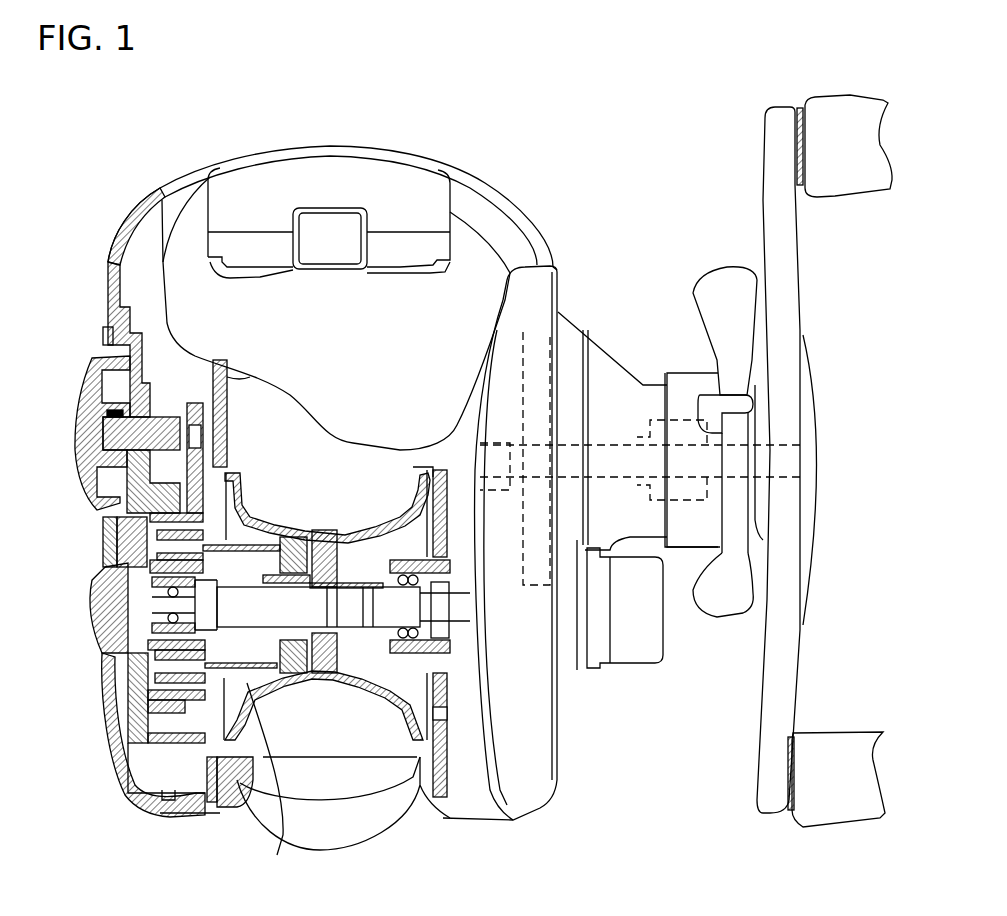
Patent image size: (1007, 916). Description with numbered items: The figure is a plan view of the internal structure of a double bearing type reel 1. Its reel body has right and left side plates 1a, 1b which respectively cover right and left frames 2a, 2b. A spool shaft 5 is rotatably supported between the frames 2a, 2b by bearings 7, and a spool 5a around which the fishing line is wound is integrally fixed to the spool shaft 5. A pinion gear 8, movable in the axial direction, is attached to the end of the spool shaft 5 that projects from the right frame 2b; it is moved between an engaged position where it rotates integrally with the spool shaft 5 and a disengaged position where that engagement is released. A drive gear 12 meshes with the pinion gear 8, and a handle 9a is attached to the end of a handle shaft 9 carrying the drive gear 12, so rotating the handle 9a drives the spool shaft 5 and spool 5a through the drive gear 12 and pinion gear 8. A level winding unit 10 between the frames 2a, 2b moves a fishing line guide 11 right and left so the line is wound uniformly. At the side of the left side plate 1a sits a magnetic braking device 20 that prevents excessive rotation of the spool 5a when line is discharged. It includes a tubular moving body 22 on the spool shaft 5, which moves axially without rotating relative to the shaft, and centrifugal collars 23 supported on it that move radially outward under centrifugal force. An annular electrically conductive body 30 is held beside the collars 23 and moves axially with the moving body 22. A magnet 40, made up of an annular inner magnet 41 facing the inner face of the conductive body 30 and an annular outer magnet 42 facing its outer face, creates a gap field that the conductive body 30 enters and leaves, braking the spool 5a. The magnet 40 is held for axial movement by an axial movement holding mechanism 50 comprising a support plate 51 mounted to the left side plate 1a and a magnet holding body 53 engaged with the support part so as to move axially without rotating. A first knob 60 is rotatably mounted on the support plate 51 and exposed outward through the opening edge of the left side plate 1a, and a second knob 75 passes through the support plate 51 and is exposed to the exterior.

The double bearing type reel 1 is at (498, 103).
The left side plate 1a is at (108, 262).
The right side plate 1b is at (563, 272).
The left frame 2a is at (232, 377).
The right frame 2b is at (505, 815).
The spool shaft 5 is at (349, 595).
The spool 5a is at (310, 527).
The bearings 7 is at (417, 530).
The pinion gear 8 is at (493, 663).
The handle shaft 9 is at (611, 443).
The handle 9a is at (790, 242).
The level winding unit 10 is at (367, 200).
The fishing line guide 11 is at (330, 212).
The drive gear 12 is at (560, 320).
The magnetic braking device 20 is at (282, 547).
The moving body 22 is at (308, 673).
The centrifugal collars 23 is at (290, 540).
The electrically conductive body 30 is at (277, 855).
The magnet 40 is at (258, 458).
The inner magnet 41 is at (110, 712).
The outer magnet 42 is at (110, 515).
The axial movement holding mechanism 50 is at (86, 645).
The support plate 51 is at (125, 800).
The magnet holding body 53 is at (123, 553).
The first knob 60 is at (98, 603).
The second knob 75 is at (90, 400).